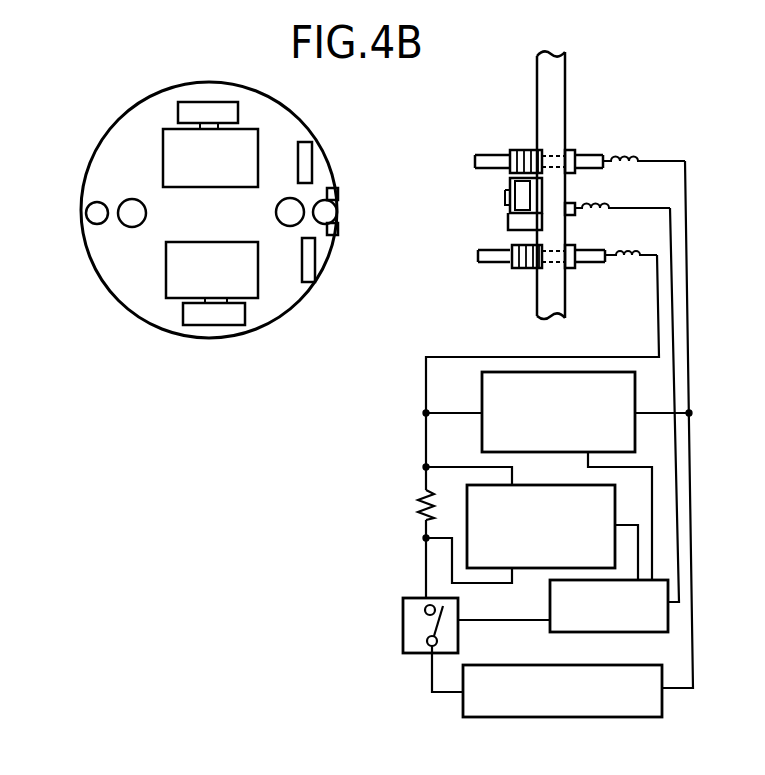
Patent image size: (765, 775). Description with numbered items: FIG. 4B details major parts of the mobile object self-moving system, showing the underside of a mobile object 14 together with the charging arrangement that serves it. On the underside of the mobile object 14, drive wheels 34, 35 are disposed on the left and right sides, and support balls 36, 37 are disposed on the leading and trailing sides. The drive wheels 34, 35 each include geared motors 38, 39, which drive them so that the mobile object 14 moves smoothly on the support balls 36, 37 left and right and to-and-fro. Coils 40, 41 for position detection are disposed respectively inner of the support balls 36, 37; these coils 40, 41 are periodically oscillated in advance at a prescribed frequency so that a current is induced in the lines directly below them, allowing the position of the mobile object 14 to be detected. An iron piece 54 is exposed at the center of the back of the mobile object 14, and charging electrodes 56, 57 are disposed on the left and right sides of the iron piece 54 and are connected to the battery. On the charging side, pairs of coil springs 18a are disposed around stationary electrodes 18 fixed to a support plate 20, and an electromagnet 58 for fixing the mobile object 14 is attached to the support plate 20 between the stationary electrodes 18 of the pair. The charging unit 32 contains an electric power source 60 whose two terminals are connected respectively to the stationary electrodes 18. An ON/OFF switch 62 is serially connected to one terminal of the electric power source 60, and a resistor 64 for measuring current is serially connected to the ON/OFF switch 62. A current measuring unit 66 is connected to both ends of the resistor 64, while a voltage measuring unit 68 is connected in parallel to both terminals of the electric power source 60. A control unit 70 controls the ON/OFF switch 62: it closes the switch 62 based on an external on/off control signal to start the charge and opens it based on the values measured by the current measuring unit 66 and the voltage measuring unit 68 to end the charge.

The mobile object 14 is at (102, 287).
The drive wheel 35 is at (182, 112).
The geared motor 39 is at (172, 170).
The geared motor 38 is at (255, 287).
The drive wheel 34 is at (215, 315).
The support ball 36 is at (92, 205).
The coil 40 is at (124, 222).
The coil 41 is at (296, 220).
The support ball 37 is at (338, 213).
The iron piece 54 is at (335, 192).
The charging electrode 57 is at (310, 143).
The charging electrode 56 is at (312, 262).
The support plate 20 is at (556, 96).
The stationary electrode 18 is at (475, 161).
The coil spring 18a is at (520, 150).
The electromagnet 58 is at (510, 190).
The charging unit 32 is at (401, 461).
The resistor 64 is at (418, 506).
The voltage measuring unit 68 is at (482, 398).
The current measuring unit 66 is at (523, 568).
The control unit 70 is at (550, 628).
The ON/OFF switch 62 is at (402, 622).
The electric power source 60 is at (463, 710).